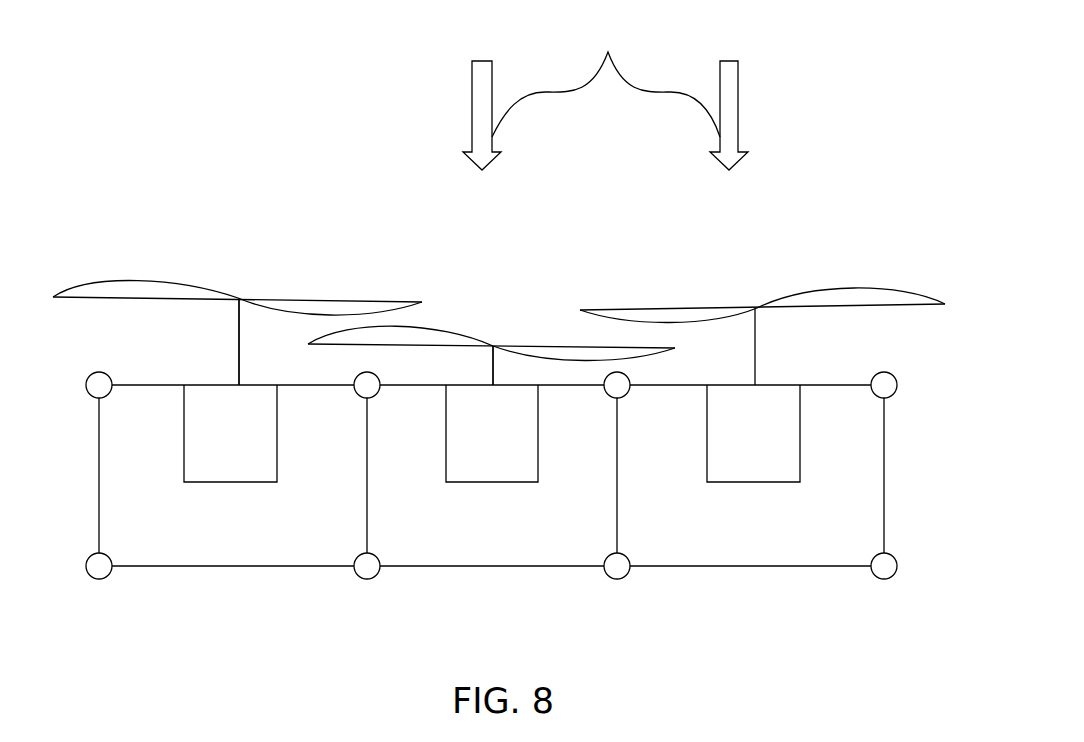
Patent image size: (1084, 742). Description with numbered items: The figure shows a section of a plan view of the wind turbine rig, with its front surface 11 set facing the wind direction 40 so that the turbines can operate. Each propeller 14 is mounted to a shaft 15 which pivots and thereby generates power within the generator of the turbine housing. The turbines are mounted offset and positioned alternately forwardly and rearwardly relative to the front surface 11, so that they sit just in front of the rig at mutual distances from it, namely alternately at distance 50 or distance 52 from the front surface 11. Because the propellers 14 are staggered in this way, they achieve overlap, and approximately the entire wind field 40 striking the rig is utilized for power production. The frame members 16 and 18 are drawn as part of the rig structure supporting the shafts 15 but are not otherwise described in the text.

The front surface 11 is at (847, 385).
The propeller 14 is at (152, 282).
The shaft 15 is at (755, 367).
The distance 50 is at (153, 341).
The distance 52 is at (497, 377).
The frame side member 16 is at (147, 392).
The frame bottom rail 18 is at (187, 570).
The wind direction 40 is at (608, 52).